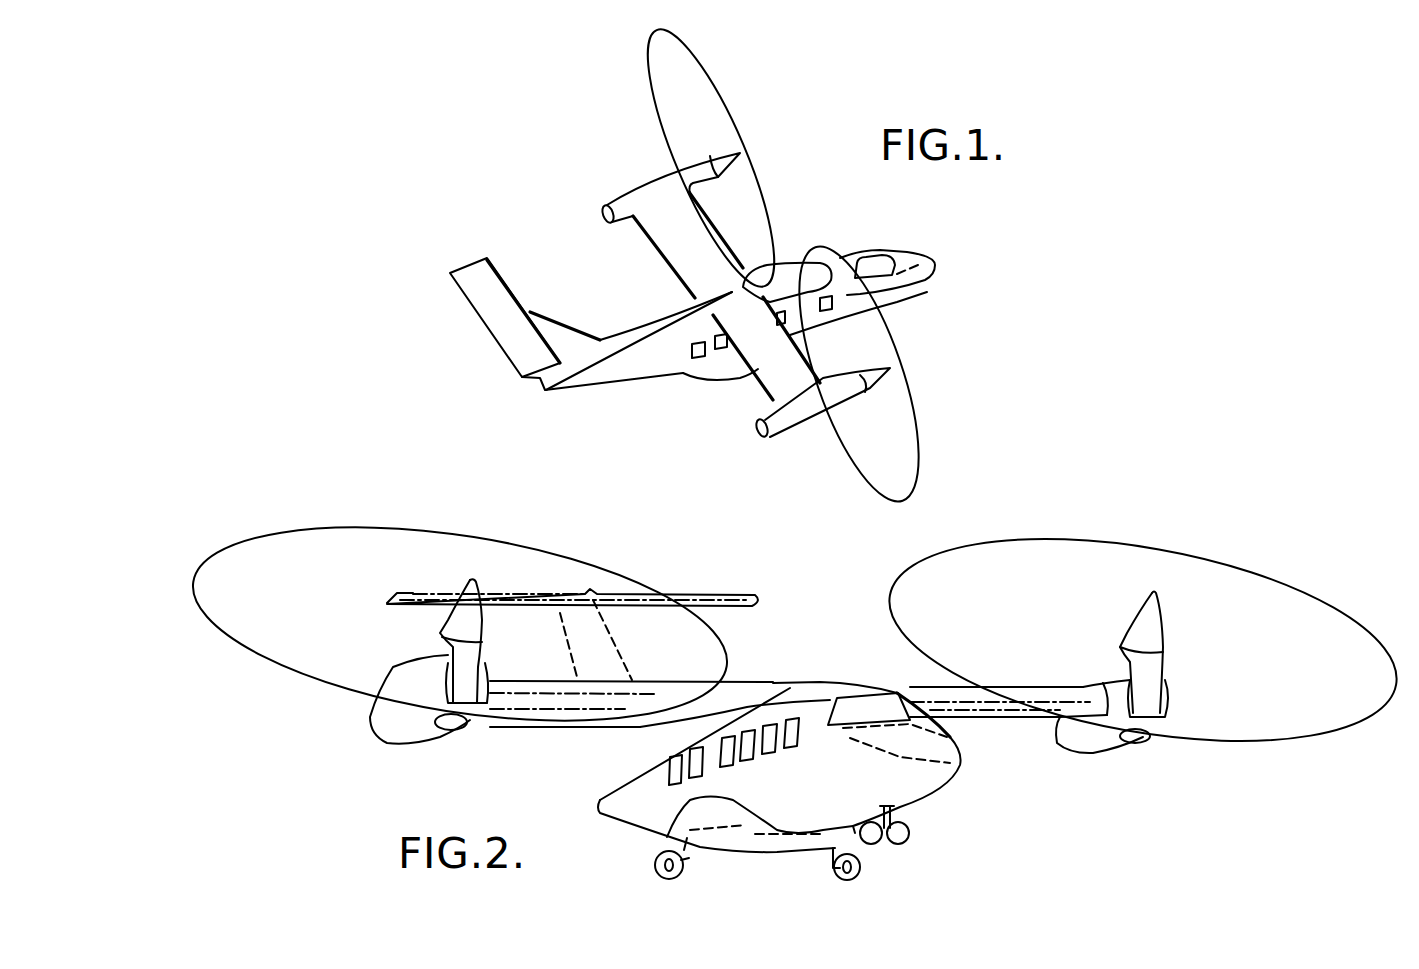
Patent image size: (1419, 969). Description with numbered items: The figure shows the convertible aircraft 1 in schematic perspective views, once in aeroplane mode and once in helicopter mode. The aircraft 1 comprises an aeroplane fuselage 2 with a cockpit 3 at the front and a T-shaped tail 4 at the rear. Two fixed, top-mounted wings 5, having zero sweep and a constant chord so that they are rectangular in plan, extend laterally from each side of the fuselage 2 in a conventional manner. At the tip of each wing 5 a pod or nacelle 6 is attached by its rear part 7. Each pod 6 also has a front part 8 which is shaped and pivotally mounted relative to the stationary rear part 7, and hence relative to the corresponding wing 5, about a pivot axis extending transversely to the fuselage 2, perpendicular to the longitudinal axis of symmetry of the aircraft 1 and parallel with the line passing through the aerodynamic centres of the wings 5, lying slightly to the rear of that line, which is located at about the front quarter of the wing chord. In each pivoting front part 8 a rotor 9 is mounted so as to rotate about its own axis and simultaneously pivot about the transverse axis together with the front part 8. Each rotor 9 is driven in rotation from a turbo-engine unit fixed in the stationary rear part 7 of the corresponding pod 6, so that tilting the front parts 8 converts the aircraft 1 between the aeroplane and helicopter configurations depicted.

In FIG. 1, the convertible aircraft 1 is at (806, 218).
In FIG. 2, the convertible aircraft 1 is at (790, 600).
In FIG. 1, the aeroplane fuselage 2 is at (648, 350).
In FIG. 2, the aeroplane fuselage 2 is at (640, 825).
In FIG. 1, the cockpit 3 is at (907, 252).
In FIG. 2, the cockpit 3 is at (903, 720).
In FIG. 1, the T-shaped tail 4 is at (485, 305).
In FIG. 2, the T-shaped tail 4 is at (590, 594).
In FIG. 1, the wing 5 is at (672, 234).
In FIG. 2, the wing 5 is at (533, 705).
In FIG. 1, the pod 6 is at (648, 185).
In FIG. 2, the pod 6 is at (424, 702).
In FIG. 2, the rear part of the pod 7 is at (383, 715).
In FIG. 2, the front part of the pod 8 is at (470, 648).
In FIG. 1, the rotor 9 is at (718, 93).
In FIG. 2, the rotor 9 is at (418, 533).